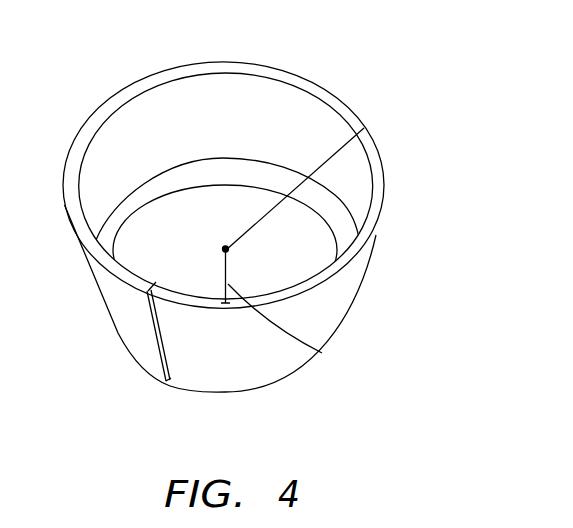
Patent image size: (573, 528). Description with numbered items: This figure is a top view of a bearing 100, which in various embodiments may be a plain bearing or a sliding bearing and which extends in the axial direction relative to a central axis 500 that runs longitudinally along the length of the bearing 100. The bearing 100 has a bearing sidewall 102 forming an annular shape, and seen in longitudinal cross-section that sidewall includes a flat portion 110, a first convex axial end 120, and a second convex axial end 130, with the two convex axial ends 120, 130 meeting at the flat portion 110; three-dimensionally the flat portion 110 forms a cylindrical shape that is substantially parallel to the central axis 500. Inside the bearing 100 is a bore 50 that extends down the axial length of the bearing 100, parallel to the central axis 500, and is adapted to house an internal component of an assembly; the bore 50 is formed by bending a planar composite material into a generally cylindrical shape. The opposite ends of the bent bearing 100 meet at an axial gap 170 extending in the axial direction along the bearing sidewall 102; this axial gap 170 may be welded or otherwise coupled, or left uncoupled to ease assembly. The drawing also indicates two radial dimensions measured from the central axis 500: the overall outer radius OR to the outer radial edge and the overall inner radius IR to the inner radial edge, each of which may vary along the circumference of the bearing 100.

The bearing 100 is at (351, 52).
The bearing sidewall 102 is at (376, 233).
The flat portion 110 is at (227, 179).
The first convex axial end 120 is at (349, 122).
The second convex axial end 130 is at (153, 193).
The bore 50 is at (226, 186).
The central axis 500 is at (229, 252).
The axial gap 170 is at (168, 382).
The overall inner radius IR is at (378, 243).
The overall outer radius OR is at (322, 353).